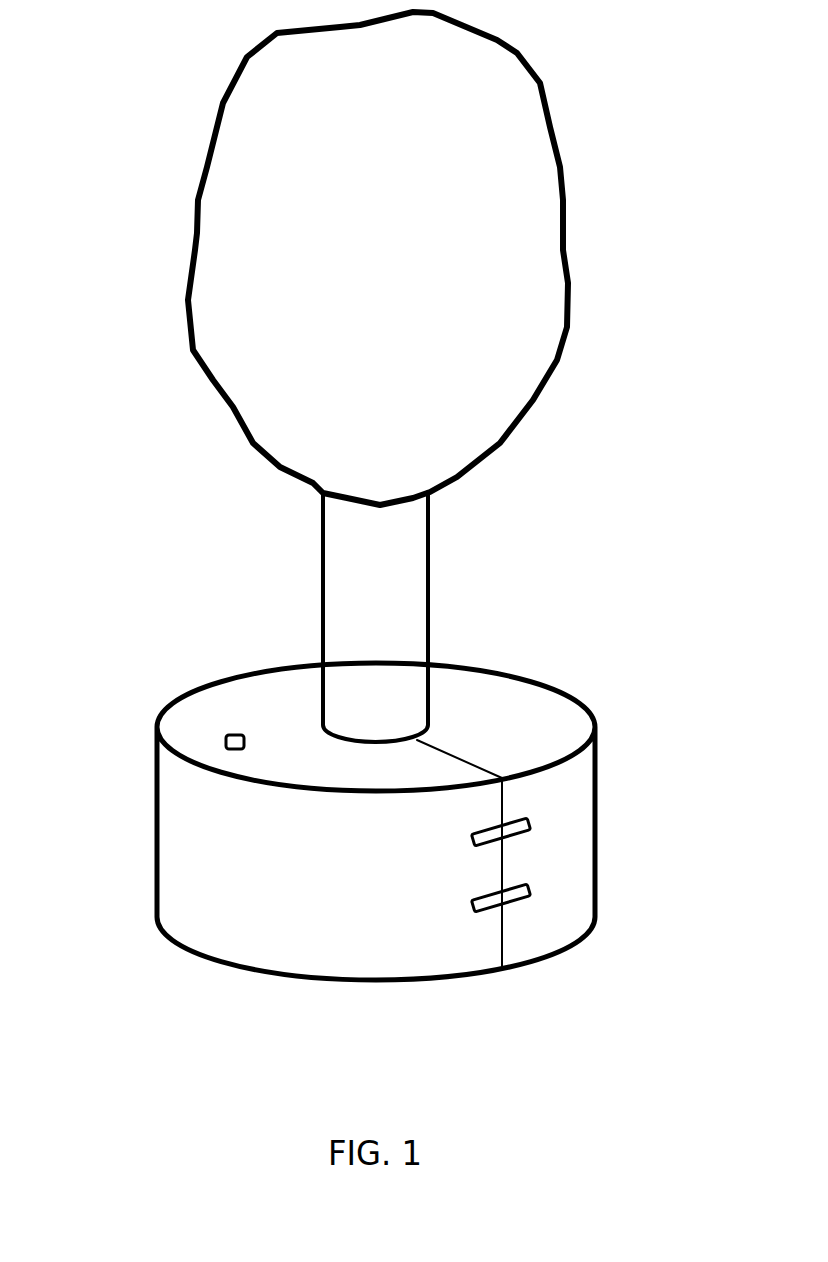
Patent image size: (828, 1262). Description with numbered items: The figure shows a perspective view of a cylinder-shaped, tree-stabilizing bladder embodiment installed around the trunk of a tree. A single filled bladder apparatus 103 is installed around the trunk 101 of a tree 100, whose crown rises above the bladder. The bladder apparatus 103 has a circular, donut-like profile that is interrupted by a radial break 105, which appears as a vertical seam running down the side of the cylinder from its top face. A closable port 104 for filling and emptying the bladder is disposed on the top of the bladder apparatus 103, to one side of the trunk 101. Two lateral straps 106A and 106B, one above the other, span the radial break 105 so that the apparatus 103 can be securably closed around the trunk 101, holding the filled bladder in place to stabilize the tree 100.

The tree 100 is at (212, 270).
The trunk 101 is at (303, 574).
The bladder apparatus 103 is at (177, 884).
The closable port 104 is at (210, 742).
The radial break 105 is at (481, 750).
The lateral strap 106A is at (550, 835).
The lateral strap 106B is at (550, 902).